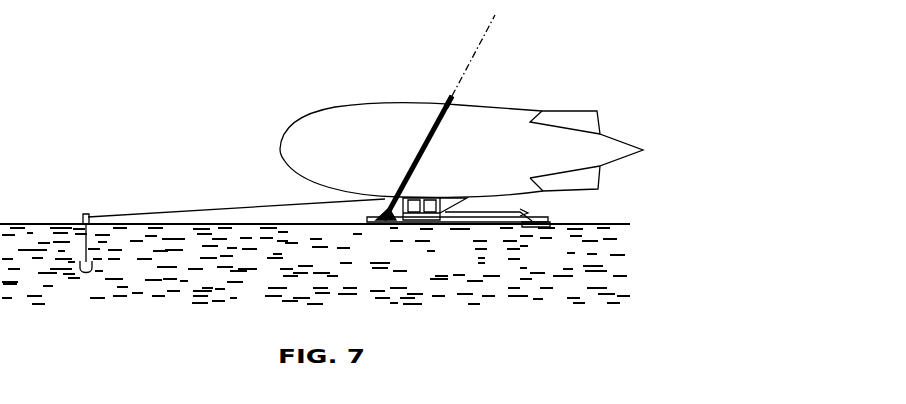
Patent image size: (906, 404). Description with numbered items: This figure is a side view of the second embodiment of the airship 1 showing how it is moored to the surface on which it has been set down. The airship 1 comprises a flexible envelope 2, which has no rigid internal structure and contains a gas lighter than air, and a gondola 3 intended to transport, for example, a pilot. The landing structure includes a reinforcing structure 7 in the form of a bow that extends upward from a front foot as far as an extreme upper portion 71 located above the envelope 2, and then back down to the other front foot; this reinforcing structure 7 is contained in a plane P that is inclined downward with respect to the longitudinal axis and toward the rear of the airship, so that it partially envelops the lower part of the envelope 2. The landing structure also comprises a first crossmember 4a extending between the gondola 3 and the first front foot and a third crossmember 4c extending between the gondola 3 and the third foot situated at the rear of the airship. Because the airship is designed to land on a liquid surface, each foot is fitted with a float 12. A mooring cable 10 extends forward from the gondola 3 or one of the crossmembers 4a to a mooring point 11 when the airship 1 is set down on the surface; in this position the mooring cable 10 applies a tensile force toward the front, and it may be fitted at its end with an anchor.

The airship 1 is at (296, 88).
The flexible envelope 2 is at (496, 117).
The gondola 3 is at (430, 222).
The first crossmember 4a is at (391, 222).
The third crossmember 4c is at (485, 222).
The reinforcing structure 7 is at (413, 163).
The extreme upper portion 71 is at (452, 96).
The plane P is at (479, 43).
The mooring cable 10 is at (199, 207).
The mooring point 11 is at (83, 215).
The float 12 is at (381, 222).